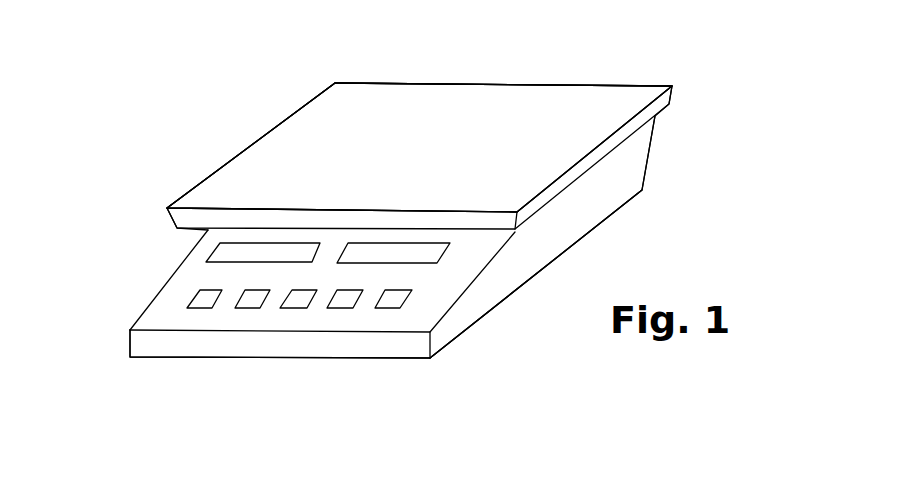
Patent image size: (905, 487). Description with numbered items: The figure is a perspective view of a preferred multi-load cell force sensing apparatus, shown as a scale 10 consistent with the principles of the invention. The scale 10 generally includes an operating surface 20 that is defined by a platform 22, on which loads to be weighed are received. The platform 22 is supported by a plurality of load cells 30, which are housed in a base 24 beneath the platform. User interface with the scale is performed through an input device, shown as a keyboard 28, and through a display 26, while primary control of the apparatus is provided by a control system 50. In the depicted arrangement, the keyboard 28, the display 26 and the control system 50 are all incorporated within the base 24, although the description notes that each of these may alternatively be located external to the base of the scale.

The scale 10 is at (705, 68).
The operating surface 20 is at (462, 83).
The platform 22 is at (233, 158).
The base 24 is at (592, 232).
The display 26 is at (212, 255).
The keyboard 28 is at (257, 308).
The load cells 30 is at (338, 137).
The control system 50 is at (495, 283).